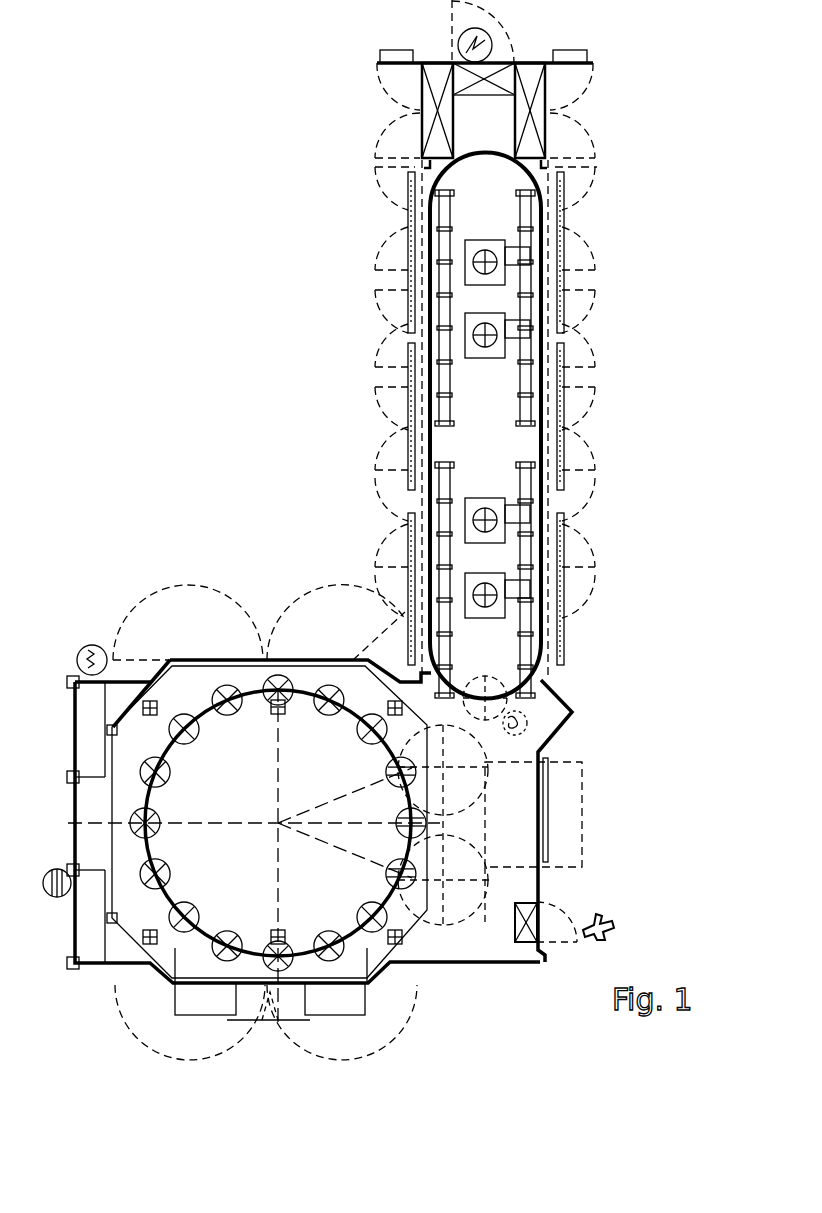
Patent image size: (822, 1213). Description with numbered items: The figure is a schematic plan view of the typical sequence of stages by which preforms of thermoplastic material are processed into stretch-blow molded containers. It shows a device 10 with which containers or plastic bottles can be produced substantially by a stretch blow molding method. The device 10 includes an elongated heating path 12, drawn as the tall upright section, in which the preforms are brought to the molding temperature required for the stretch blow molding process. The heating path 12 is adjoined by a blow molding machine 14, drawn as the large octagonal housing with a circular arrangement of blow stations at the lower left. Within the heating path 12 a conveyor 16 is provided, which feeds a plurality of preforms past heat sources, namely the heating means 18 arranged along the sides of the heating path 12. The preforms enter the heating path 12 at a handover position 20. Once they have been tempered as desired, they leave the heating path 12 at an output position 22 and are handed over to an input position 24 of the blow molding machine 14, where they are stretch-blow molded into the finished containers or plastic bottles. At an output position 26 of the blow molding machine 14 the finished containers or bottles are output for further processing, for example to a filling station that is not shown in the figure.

The device 10 is at (283, 410).
The heating path 12 is at (490, 133).
The blow molding machine 14 is at (257, 683).
The conveyor 16 is at (541, 318).
The heating means 18 is at (548, 480).
The handover position 20 is at (522, 713).
The output position 22 is at (545, 680).
The input position 24 is at (472, 787).
The output position 26 is at (478, 905).